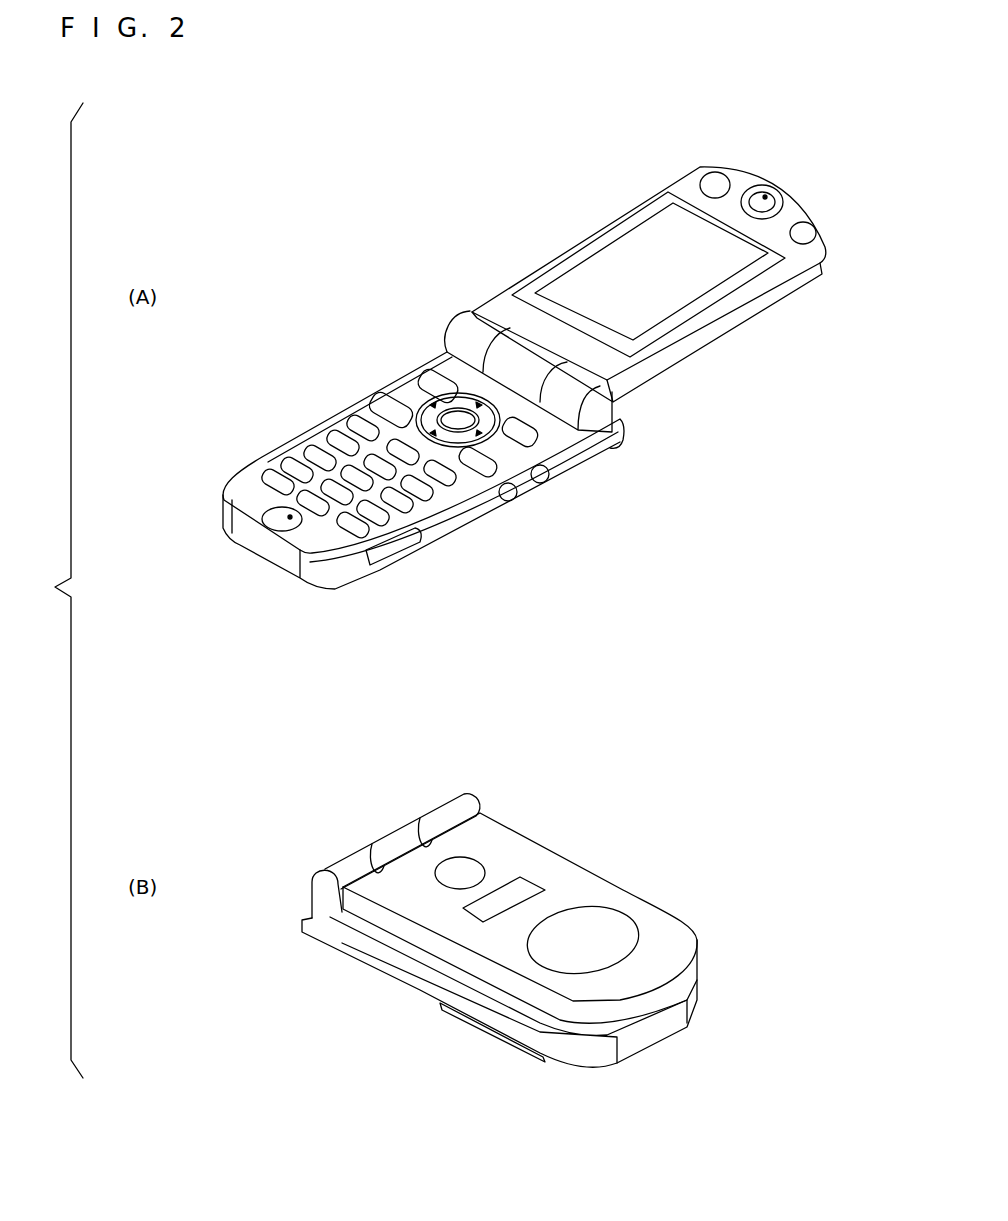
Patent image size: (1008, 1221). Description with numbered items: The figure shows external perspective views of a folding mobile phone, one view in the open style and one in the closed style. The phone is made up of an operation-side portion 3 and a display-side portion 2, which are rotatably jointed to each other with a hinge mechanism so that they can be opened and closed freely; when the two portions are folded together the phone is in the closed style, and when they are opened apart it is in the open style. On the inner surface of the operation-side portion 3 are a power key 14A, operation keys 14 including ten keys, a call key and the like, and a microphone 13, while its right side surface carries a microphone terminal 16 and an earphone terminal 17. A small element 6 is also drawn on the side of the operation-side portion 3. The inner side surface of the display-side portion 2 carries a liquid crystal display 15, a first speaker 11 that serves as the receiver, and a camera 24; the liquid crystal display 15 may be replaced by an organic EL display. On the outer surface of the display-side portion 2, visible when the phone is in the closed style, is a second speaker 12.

The display-side portion 2 is at (710, 328).
The operation-side portion 3 is at (580, 457).
The connector cover / slot 6 is at (408, 570).
The first speaker 11 is at (764, 195).
The second speaker 12 is at (612, 926).
The microphone 13 is at (290, 517).
The operation keys 14 is at (405, 341).
The power key 14A is at (452, 481).
The liquid crystal display (LCD) 15 is at (610, 255).
The microphone terminal 16 is at (547, 481).
The earphone terminal 17 is at (514, 500).
The camera 24 is at (710, 172).